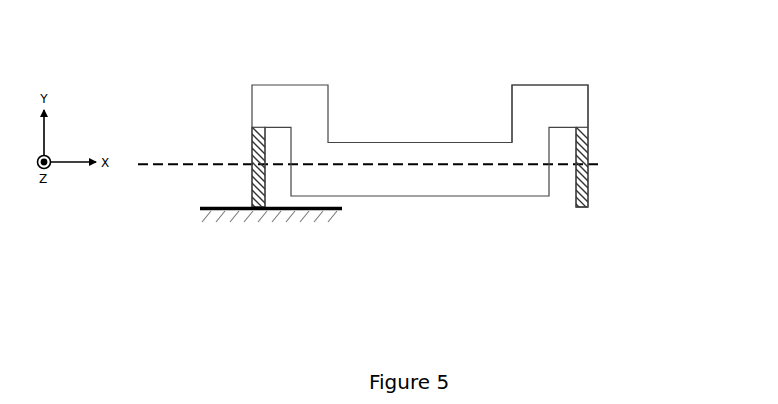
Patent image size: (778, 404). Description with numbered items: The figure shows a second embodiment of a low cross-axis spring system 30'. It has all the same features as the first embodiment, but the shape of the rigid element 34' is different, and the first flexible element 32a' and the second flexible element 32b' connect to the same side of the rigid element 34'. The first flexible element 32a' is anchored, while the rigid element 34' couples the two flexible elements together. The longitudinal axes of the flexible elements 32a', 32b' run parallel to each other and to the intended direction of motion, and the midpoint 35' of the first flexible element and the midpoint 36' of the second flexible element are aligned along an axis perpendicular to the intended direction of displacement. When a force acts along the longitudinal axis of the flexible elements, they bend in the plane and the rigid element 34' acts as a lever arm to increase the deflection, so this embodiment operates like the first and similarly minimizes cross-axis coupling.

The spring system 30' is at (420, 120).
The rigid element 34' is at (420, 122).
The midpoint of the second flexible element 36' is at (591, 104).
The midpoint of the first flexible element 35' is at (420, 148).
The first flexible element 32a' is at (232, 203).
The second flexible element 32b' is at (622, 222).